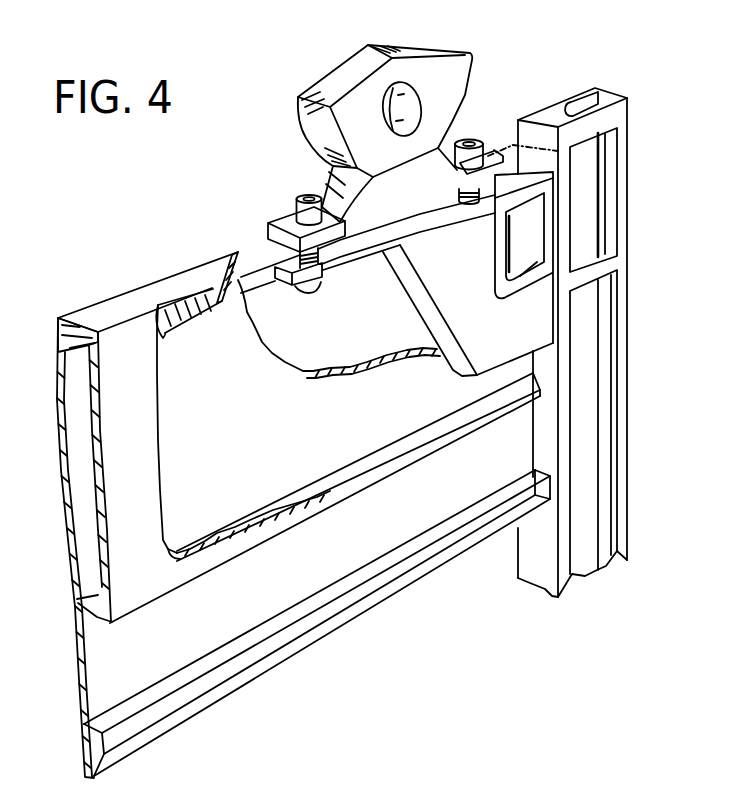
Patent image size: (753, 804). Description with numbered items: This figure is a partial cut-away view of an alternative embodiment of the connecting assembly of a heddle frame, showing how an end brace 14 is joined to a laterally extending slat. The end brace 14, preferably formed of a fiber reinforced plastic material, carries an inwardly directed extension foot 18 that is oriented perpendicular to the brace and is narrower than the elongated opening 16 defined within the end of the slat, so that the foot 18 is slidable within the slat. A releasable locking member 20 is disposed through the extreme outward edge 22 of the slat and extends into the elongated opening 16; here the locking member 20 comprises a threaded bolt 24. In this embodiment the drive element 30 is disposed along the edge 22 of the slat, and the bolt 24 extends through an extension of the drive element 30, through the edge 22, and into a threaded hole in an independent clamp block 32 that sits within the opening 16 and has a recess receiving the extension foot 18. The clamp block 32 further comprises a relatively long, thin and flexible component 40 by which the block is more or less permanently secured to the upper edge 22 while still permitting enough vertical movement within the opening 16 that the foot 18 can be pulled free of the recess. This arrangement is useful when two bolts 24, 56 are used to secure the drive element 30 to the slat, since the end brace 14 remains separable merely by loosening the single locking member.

The end brace 14 is at (628, 378).
The elongated opening 16 is at (80, 472).
The extension foot 18 is at (546, 238).
The releasable locking member 20 is at (488, 122).
The outward edge of the slat 22 is at (175, 285).
The threaded bolt 24 is at (493, 803).
The drive element 30 is at (421, 45).
The clamp block 32 is at (417, 312).
The flexible component 40 is at (345, 268).
The bolt 56 is at (297, 200).